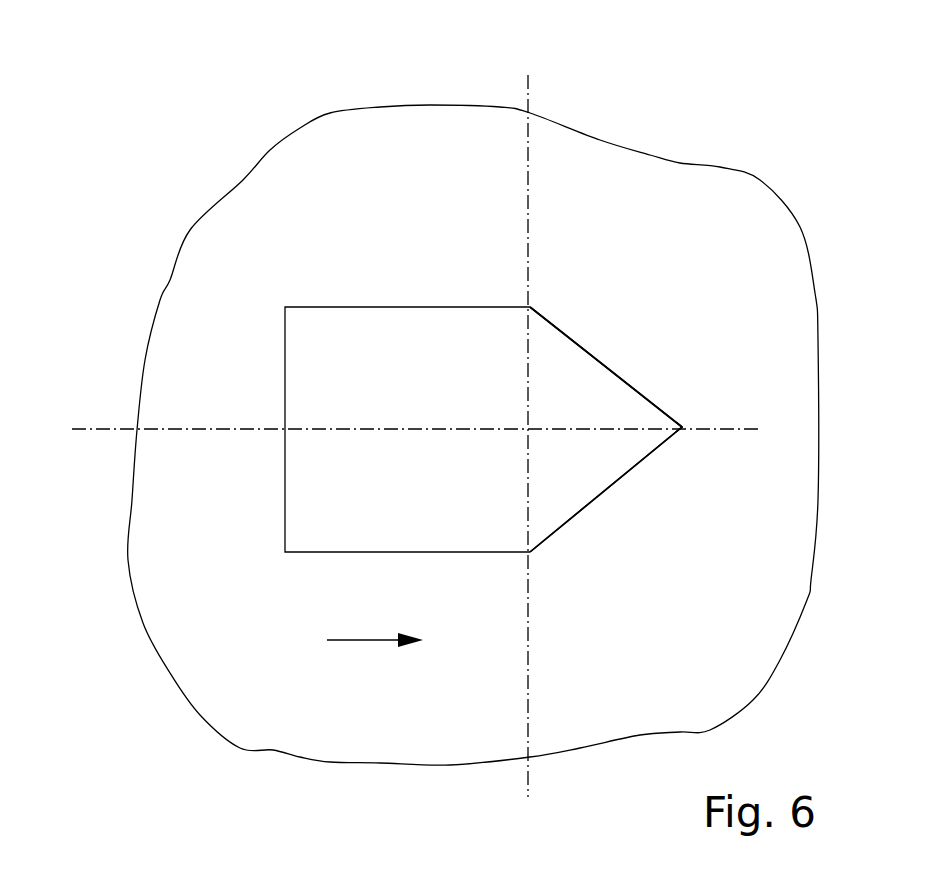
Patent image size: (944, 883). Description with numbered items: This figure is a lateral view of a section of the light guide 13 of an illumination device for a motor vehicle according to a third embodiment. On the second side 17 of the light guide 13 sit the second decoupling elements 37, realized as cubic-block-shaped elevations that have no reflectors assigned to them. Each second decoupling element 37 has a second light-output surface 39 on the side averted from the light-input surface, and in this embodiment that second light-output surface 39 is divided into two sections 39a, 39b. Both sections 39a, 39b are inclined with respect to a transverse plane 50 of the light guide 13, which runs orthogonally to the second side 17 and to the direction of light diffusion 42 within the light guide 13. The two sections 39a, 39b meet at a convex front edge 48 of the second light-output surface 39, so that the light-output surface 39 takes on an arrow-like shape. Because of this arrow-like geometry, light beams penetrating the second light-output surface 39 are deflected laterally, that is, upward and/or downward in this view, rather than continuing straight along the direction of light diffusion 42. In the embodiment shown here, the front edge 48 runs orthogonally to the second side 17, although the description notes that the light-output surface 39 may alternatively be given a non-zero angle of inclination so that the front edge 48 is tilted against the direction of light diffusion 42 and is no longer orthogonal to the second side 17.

The light guide 13 is at (158, 103).
The second side 17 is at (673, 193).
The second decoupling elements 37 is at (343, 332).
The second light-output surface 39 is at (622, 382).
The section of the second light-output surface 39a is at (640, 390).
The section of the second light-output surface 39b is at (650, 460).
The direction of light diffusion 42 is at (370, 642).
The convex front edge 48 is at (685, 423).
The transverse plane 50 is at (529, 240).